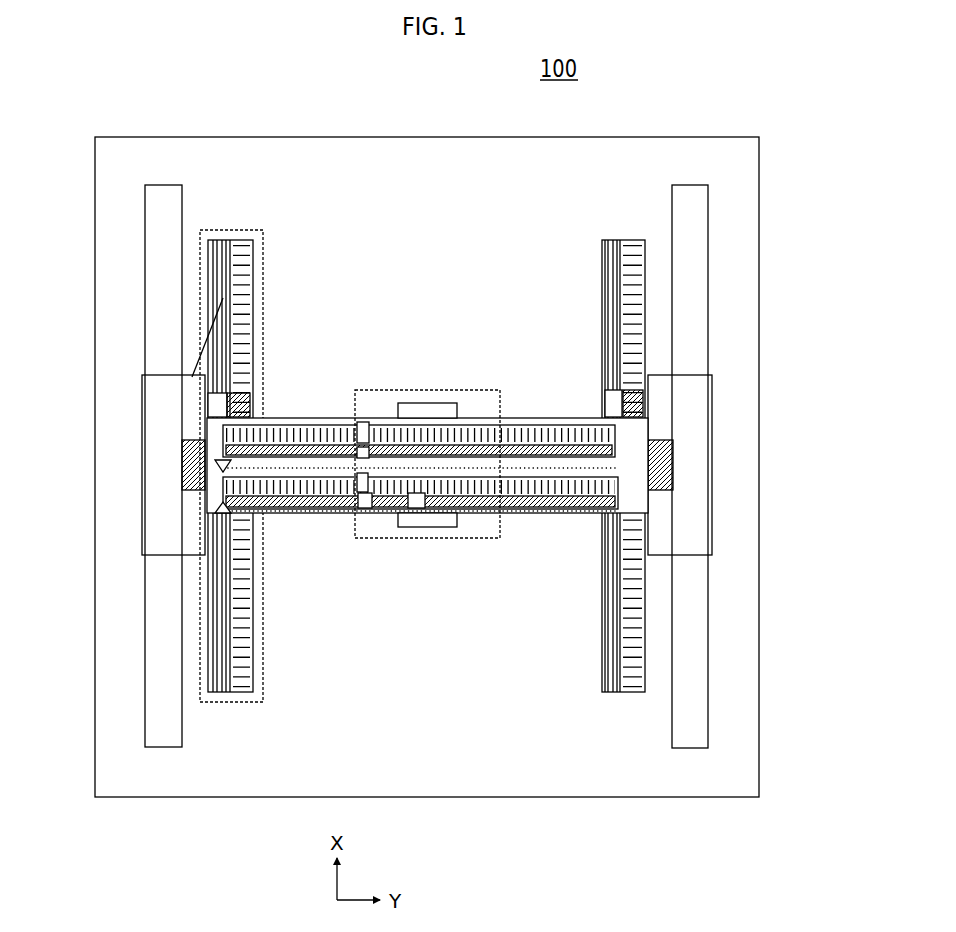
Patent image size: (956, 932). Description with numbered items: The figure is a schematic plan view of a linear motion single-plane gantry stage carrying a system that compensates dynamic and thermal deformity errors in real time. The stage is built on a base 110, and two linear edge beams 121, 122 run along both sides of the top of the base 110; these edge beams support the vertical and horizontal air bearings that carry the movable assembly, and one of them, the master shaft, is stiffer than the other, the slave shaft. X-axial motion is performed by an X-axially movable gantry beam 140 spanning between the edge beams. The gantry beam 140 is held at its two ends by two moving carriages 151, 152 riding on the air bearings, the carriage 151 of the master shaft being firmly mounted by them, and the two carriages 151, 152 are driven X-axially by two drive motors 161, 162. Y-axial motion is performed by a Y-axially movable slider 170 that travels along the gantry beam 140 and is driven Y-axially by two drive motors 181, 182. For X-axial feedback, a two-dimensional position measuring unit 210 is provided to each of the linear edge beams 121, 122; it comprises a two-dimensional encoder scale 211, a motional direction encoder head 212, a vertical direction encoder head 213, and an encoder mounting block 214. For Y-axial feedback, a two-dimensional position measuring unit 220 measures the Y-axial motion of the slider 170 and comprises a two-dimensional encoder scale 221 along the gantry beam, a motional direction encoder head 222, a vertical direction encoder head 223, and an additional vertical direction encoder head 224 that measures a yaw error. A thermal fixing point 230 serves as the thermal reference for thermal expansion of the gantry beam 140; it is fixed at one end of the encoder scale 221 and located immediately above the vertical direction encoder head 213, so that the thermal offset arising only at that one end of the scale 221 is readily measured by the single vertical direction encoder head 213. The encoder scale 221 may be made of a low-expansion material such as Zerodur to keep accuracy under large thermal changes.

The base 110 is at (760, 158).
The linear edge beam 121 is at (165, 185).
The linear edge beam 122 is at (708, 205).
The X-axially movable gantry beam 140 is at (555, 418).
The moving carriage 151 is at (223, 298).
The moving carriage 152 is at (645, 393).
The drive motor 161 is at (190, 512).
The drive motor 162 is at (660, 460).
The Y-axially movable slider 170 is at (478, 390).
The drive motor 181 is at (420, 403).
The drive motor 182 is at (443, 528).
The two-dimensional position measuring unit 210 is at (233, 230).
The two-dimensional encoder scale 211 is at (252, 253).
The motional direction encoder head 212 is at (250, 407).
The vertical direction encoder head 213 is at (255, 392).
The encoder mounting block 214 is at (235, 355).
The two-dimensional position measuring unit 220 is at (587, 508).
The two-dimensional encoder scale 221 is at (538, 508).
The motional direction encoder head 222 is at (318, 492).
The vertical direction encoder head 223 is at (362, 510).
The additional vertical direction encoder head 224 is at (415, 510).
The thermal fixing point 230 is at (223, 460).